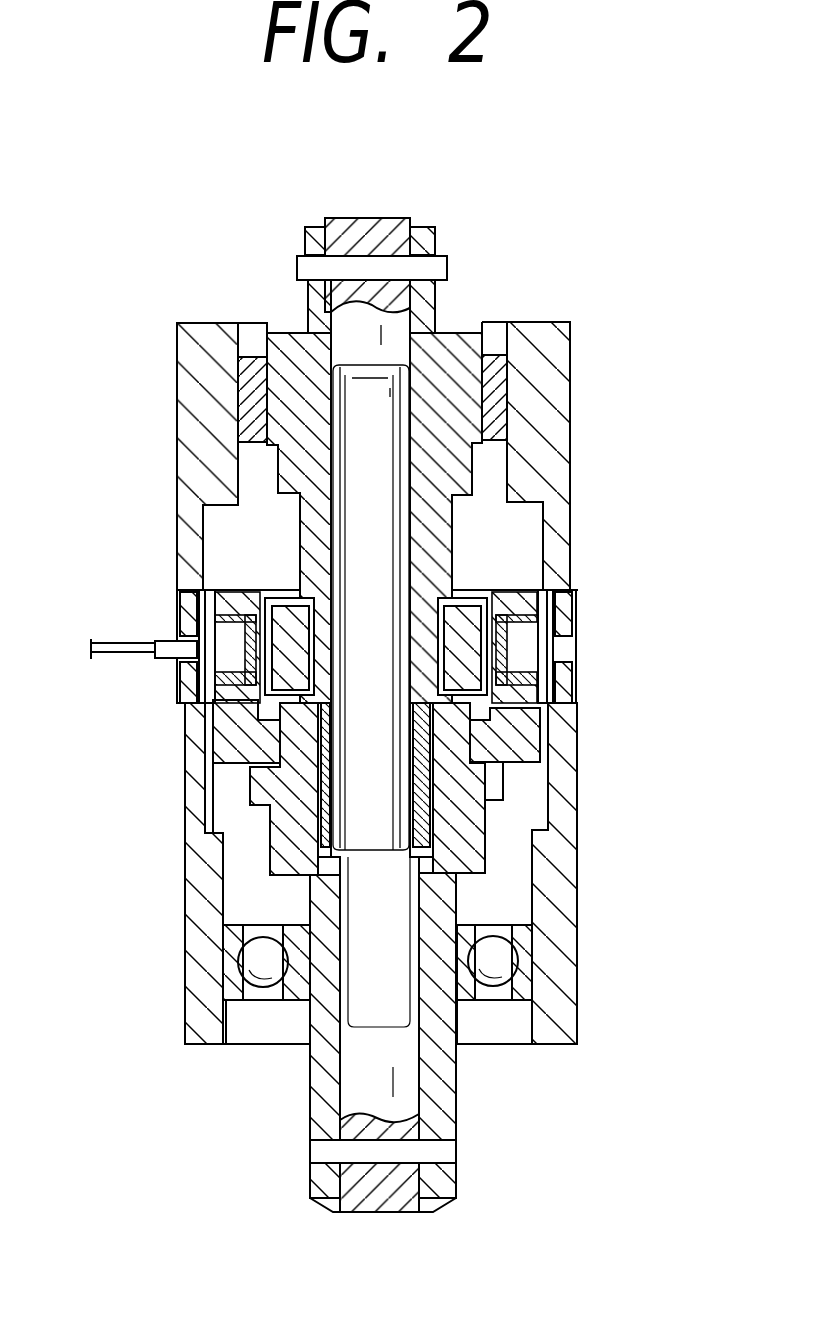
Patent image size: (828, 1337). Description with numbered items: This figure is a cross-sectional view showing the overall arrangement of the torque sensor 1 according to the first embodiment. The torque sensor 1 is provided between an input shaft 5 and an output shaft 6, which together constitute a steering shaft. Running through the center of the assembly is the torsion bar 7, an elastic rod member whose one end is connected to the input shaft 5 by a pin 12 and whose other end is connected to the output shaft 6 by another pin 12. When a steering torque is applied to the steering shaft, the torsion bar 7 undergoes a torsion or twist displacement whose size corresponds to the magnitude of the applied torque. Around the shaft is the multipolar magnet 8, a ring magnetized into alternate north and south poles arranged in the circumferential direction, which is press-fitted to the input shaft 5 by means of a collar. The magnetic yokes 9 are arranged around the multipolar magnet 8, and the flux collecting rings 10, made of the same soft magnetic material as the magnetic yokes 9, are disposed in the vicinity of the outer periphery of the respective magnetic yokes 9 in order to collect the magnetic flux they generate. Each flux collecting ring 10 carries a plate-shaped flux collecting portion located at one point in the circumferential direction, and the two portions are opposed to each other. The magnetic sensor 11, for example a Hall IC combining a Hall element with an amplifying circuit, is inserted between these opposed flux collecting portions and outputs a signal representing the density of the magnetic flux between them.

The torque sensor 1 is at (601, 374).
The input shaft 5 is at (453, 343).
The output shaft 6 is at (447, 1085).
The torsion bar 7 is at (387, 528).
The multipolar magnet 8 is at (473, 648).
The magnetic yokes 9 is at (518, 607).
The flux collecting rings 10 is at (578, 684).
The magnetic sensor 11 is at (160, 662).
The pin 12 is at (371, 268).